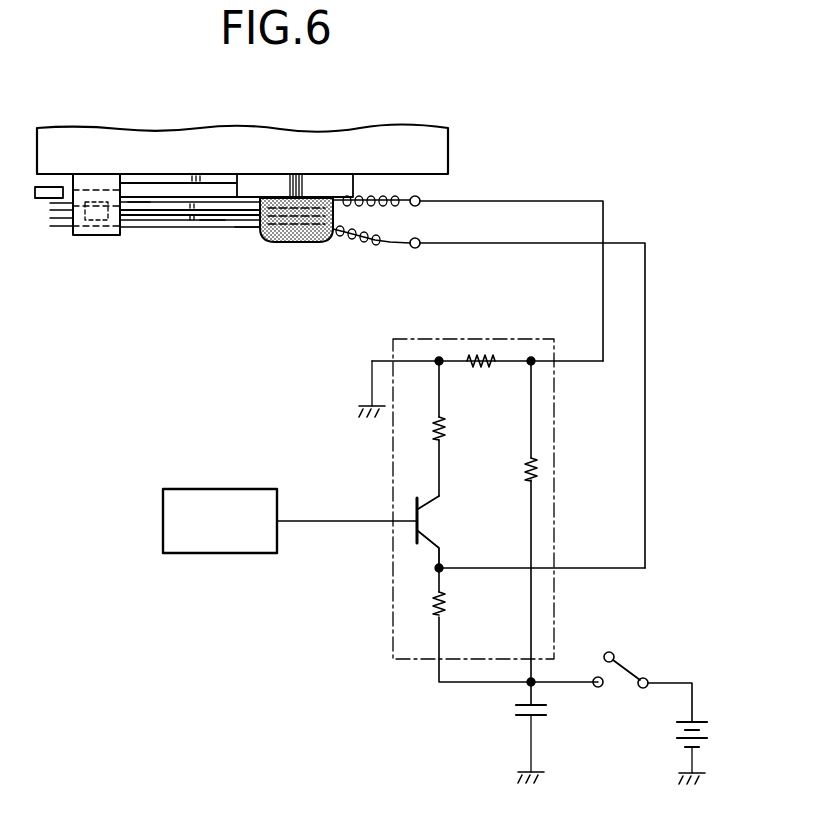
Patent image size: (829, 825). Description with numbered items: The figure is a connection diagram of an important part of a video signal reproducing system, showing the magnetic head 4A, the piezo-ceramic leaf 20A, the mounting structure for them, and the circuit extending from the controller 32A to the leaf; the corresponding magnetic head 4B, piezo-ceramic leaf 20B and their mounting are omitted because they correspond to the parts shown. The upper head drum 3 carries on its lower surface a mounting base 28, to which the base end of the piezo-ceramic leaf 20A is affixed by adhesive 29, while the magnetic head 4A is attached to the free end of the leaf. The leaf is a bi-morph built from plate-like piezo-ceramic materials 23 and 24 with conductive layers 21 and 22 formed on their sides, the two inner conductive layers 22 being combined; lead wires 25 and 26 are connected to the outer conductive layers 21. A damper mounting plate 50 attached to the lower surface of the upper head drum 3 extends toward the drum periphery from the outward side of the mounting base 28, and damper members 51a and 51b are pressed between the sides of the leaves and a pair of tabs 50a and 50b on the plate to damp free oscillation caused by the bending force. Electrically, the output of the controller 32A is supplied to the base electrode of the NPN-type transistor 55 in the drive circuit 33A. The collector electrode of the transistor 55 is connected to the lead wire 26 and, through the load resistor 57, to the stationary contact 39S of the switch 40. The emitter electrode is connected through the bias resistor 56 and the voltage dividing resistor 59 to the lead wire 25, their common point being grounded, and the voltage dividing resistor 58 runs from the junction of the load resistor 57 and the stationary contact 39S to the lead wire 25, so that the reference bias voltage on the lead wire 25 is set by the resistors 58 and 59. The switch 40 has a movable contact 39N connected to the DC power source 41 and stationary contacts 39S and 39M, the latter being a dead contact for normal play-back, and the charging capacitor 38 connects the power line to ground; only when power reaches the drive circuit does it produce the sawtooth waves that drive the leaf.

The upper head drum 3 is at (435, 135).
The tab 50a is at (103, 148).
The tab 50b is at (98, 190).
The damper mounting plate 50 is at (177, 180).
The mounting base 28 is at (287, 180).
The damper member 51a is at (107, 267).
The damper member 51b is at (95, 220).
The magnetic head 4A is at (59, 241).
The magnetic head 4B is at (45, 200).
The piezo-ceramic leaf 20A is at (201, 254).
The piezo-ceramic leaf 20B is at (187, 230).
The conductive layer 21 is at (145, 230).
The conductive layer 22 is at (175, 230).
The piezo-ceramic material 23 is at (244, 232).
The piezo-ceramic material 24 is at (210, 230).
The adhesive 29 is at (300, 243).
The lead wire 25 is at (411, 205).
The lead wire 26 is at (412, 247).
The drive circuit 33A is at (609, 521).
The voltage dividing resistor 59 is at (476, 352).
The bias resistor 56 is at (446, 430).
The voltage dividing resistor 58 is at (542, 470).
The load resistor 57 is at (446, 604).
The NPN-type transistor 55 is at (410, 526).
The controller 32A is at (210, 489).
The charging capacitor 38 is at (512, 710).
The switch 40 is at (634, 671).
The stationary contact 39M is at (616, 654).
The stationary contact 39S is at (597, 690).
The movable contact 39N is at (643, 690).
The DC power source 41 is at (684, 740).